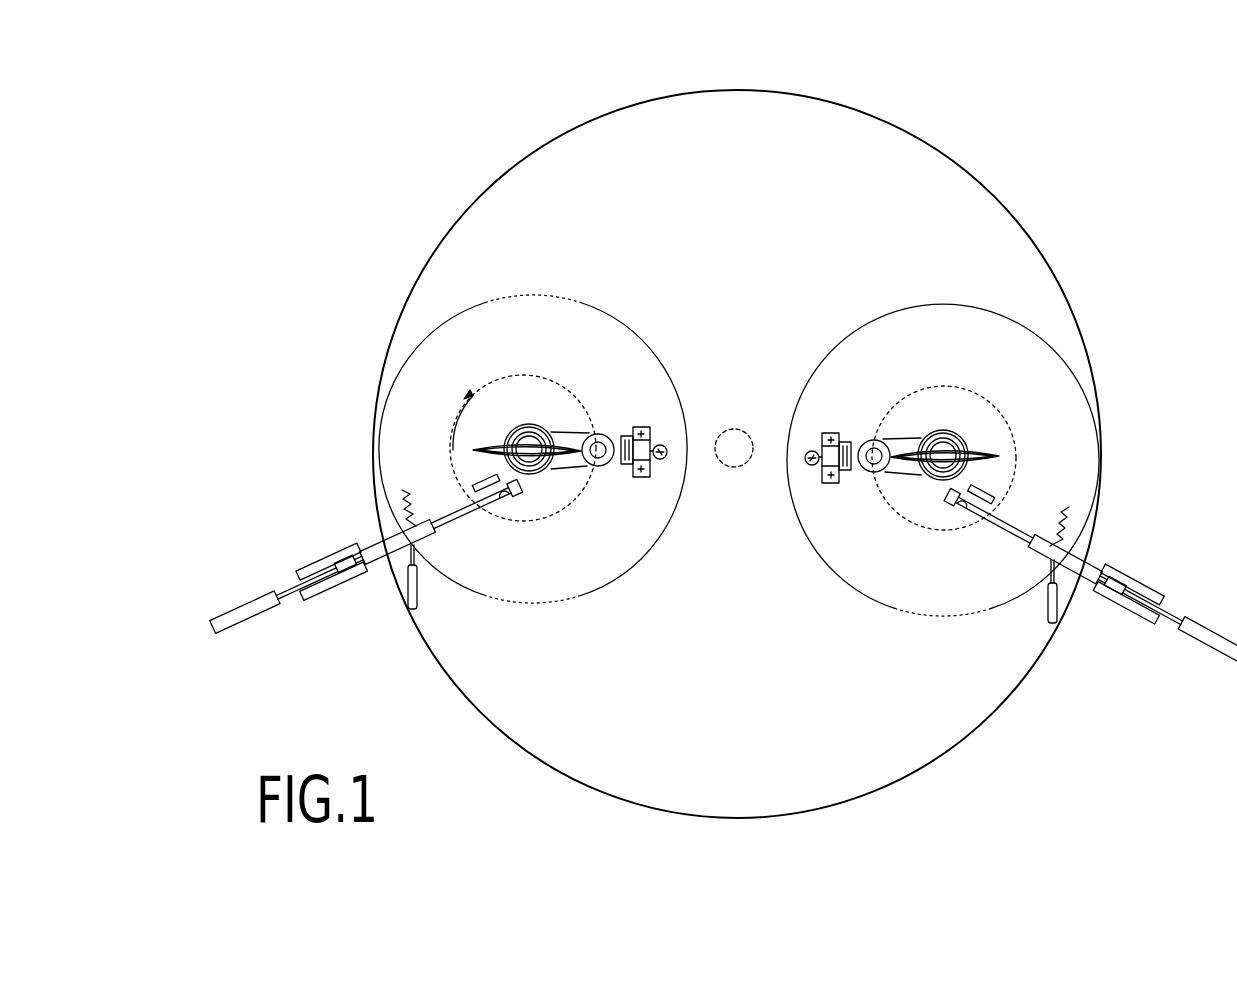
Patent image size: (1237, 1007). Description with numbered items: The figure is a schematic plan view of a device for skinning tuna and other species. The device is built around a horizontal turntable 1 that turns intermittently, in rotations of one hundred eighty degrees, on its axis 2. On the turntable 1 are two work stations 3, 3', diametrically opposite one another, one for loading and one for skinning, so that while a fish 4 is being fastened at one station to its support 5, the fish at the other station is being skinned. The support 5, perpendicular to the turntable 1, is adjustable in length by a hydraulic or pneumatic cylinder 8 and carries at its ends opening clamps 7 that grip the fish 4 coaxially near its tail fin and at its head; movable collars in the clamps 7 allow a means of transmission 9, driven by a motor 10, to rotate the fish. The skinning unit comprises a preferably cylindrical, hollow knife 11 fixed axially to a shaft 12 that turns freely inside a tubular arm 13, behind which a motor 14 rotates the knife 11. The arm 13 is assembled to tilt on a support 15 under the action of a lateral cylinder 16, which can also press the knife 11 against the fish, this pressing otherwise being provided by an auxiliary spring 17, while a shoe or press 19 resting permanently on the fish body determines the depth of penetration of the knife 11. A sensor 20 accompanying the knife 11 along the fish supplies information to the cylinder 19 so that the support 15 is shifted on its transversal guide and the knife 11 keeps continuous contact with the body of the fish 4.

The horizontal turntable 1 is at (873, 745).
The axis 2 is at (735, 428).
The work station 3 is at (533, 558).
The work station 3' is at (943, 345).
The fish 4 is at (522, 519).
The support 5 is at (646, 478).
The opening clamps 7 is at (511, 429).
The hydraulic or pneumatic cylinder 8 is at (662, 442).
The means of transmission 9 is at (529, 424).
The motor 10 is at (597, 466).
The knife 11 is at (515, 485).
The shaft 12 is at (465, 503).
The tubular arm 13 is at (380, 553).
The motor 14 is at (347, 580).
The support 15 is at (333, 553).
The lateral cylinder 16 is at (413, 609).
The auxiliary spring 17 is at (402, 493).
The shoe or press 19 is at (248, 613).
The sensor 20 is at (474, 452).